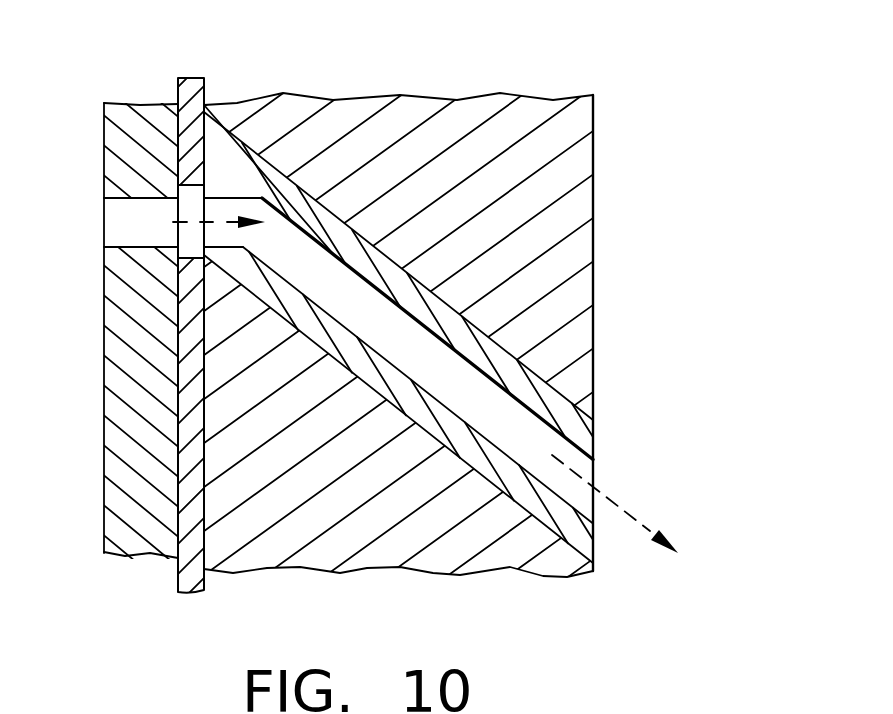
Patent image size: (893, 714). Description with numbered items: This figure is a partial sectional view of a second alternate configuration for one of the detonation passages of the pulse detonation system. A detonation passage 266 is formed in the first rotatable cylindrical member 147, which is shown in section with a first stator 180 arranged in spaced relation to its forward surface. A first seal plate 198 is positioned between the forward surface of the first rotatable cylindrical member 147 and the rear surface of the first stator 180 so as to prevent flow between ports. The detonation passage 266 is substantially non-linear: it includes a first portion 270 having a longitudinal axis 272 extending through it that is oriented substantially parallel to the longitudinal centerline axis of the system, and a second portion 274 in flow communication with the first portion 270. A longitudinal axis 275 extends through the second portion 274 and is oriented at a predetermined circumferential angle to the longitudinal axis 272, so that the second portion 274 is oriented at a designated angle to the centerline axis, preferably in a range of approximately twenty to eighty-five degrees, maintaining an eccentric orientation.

The first rotatable cylindrical member 147 is at (484, 99).
The first stator 180 is at (146, 103).
The first seal plate 198 is at (191, 80).
The first portion 270 is at (265, 166).
The longitudinal axis 272 is at (212, 222).
The second portion 274 is at (333, 215).
The detonation passage 266 is at (540, 375).
The longitudinal axis 275 is at (630, 510).